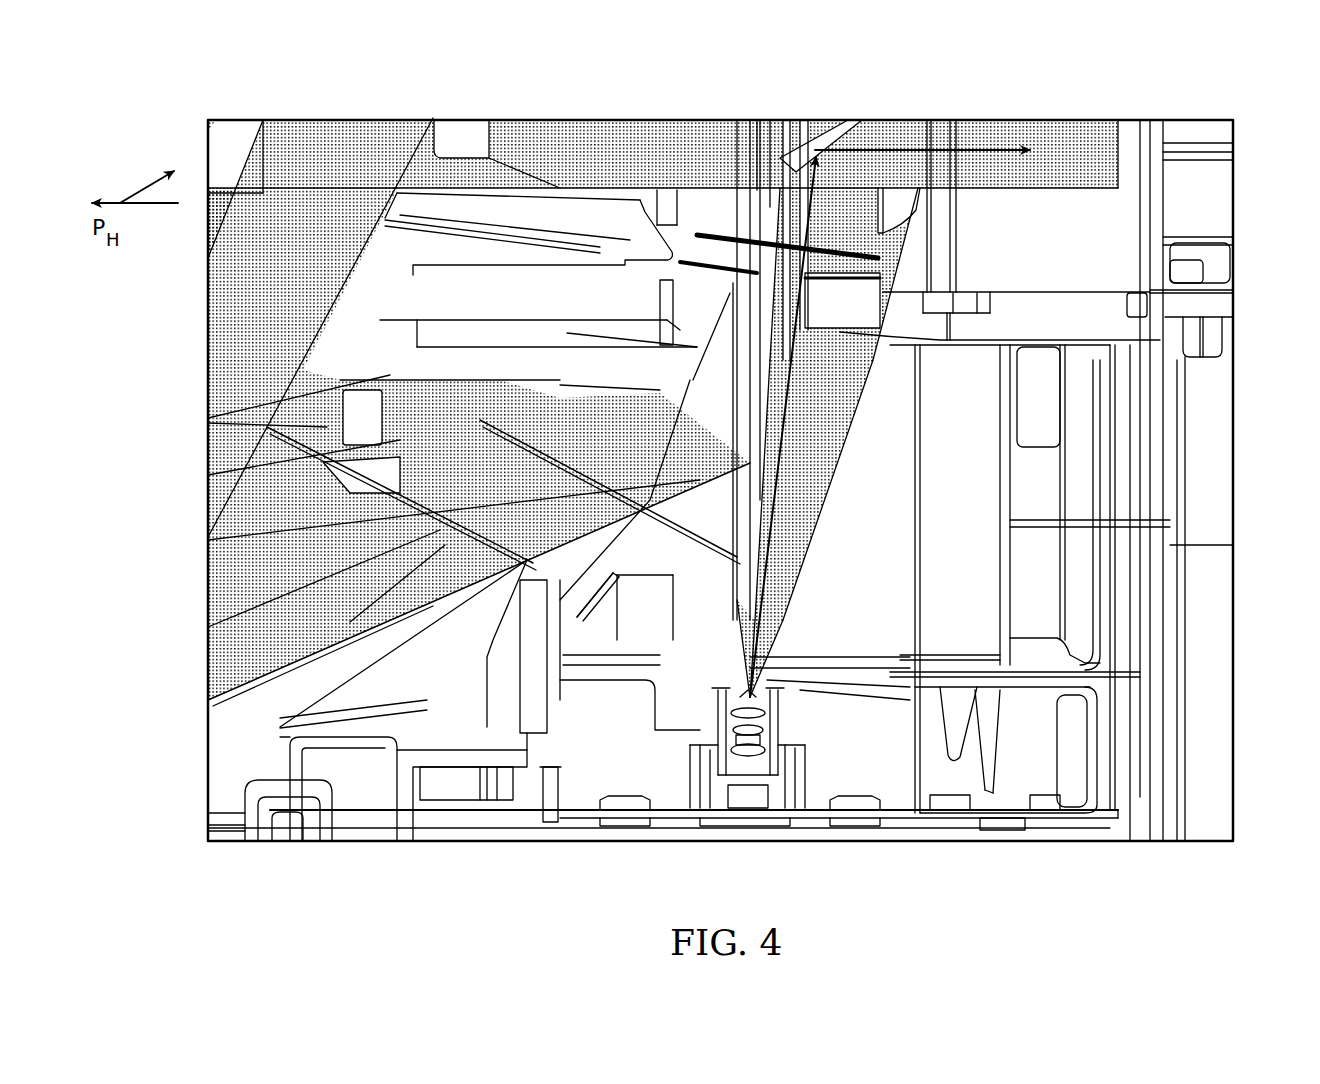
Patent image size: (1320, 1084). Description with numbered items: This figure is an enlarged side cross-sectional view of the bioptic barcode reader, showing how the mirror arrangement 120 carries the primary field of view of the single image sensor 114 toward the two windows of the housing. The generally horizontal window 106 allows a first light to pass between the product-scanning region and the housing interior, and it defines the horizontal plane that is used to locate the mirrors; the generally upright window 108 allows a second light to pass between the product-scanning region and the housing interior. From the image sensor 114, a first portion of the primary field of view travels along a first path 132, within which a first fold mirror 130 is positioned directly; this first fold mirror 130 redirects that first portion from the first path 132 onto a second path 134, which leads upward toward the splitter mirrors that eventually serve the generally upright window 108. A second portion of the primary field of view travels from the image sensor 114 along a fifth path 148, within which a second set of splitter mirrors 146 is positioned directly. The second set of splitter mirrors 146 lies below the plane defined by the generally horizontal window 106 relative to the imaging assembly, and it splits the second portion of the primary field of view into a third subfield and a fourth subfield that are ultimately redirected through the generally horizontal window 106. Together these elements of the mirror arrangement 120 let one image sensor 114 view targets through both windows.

The generally horizontal window 106 is at (317, 262).
The generally upright window 108 is at (762, 133).
The image sensor 114 is at (803, 830).
The mirror arrangement 120 is at (648, 532).
The first fold mirror 130 is at (800, 307).
The first path 132 is at (835, 430).
The second path 134 is at (975, 137).
The second set of splitter mirrors 146 is at (738, 690).
The fifth path 148 is at (705, 600).